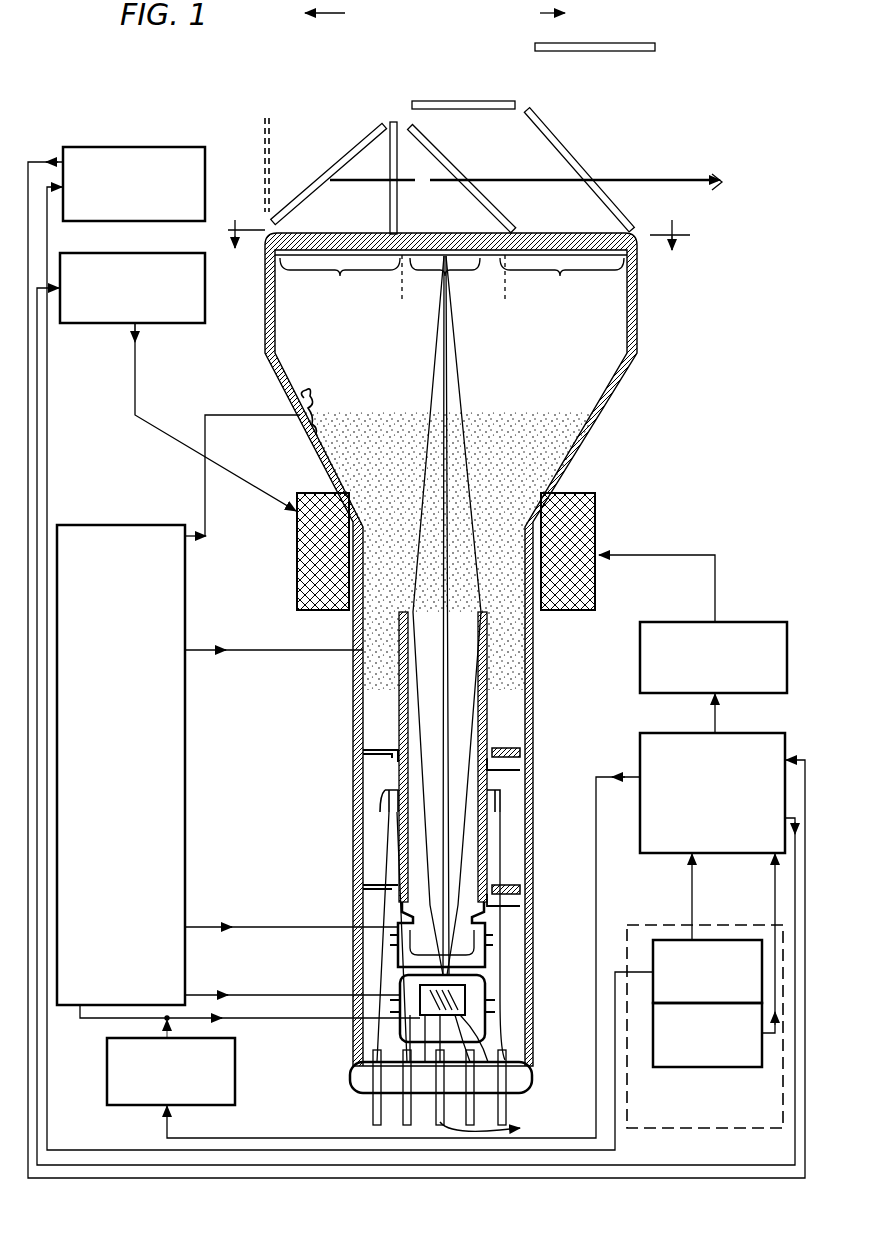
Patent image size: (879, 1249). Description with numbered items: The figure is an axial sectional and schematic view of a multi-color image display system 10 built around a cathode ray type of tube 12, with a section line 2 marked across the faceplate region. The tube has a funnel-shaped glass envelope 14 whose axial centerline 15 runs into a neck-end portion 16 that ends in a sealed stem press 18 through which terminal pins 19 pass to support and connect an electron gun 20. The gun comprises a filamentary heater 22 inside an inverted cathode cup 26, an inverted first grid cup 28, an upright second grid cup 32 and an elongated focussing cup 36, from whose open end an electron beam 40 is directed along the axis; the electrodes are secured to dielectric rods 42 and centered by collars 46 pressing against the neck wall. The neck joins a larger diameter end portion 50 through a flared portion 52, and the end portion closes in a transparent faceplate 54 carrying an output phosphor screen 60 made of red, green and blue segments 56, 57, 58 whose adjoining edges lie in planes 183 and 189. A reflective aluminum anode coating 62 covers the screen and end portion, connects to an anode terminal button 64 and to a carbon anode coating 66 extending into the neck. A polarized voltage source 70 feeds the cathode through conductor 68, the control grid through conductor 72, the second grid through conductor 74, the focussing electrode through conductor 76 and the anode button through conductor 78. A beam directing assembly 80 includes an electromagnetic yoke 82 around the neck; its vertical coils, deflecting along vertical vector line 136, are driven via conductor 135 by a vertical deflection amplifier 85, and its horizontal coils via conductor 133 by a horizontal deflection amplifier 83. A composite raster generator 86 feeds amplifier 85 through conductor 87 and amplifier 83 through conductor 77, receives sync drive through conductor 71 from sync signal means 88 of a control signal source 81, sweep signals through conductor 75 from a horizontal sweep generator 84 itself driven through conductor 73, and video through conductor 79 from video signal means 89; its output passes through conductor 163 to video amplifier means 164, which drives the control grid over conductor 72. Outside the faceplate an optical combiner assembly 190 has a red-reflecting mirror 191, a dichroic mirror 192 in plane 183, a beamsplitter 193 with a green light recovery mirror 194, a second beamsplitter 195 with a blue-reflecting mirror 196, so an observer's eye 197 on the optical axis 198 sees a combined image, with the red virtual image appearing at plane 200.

The section line 2- 2 is at (459, 247).
The multi-color image display system 10 is at (672, 400).
The cathode ray type of tube 12 is at (580, 485).
The funnel-shaped envelope 14 is at (536, 680).
The axial centerline 15 is at (442, 396).
The neck-end portion 16 is at (534, 692).
The stem press 18 is at (525, 1090).
The terminal pins 19 is at (491, 1127).
The electron gun 20 is at (502, 745).
The filamentary heater 22 is at (495, 1038).
The cathode cup 26 is at (467, 995).
The first grid cup 28 is at (487, 975).
The second grid cup 32 is at (488, 926).
The focussing cup 36 is at (490, 846).
The electron beam 40 is at (442, 330).
The dielectric rods 42 is at (380, 796).
The collars 46 is at (372, 750).
The larger diameter end portion 50 is at (638, 296).
The flared portion 52 is at (603, 402).
The faceplate 54 is at (565, 238).
The outer segment 56 is at (340, 278).
The central segment 57 is at (445, 278).
The outer segment 58 is at (562, 278).
The output phosphor screen 60 is at (437, 257).
The anode coating 62 is at (360, 258).
The anode terminal button 64 is at (303, 397).
The anode coating 66 is at (356, 410).
The conductor 68 is at (256, 993).
The polarized voltage source 70 is at (76, 524).
The conductor 71 is at (691, 892).
The conductor 72 is at (268, 1019).
The conductor 73 is at (50, 468).
The conductor 74 is at (268, 925).
The conductor 75 is at (30, 410).
The conductor 76 is at (302, 660).
The conductor 77 is at (40, 440).
The conductor 78 is at (206, 513).
The electrical conductor 79 is at (775, 905).
The beam directing assembly 80 is at (625, 538).
The control signal source 81 is at (715, 1130).
The electromagnetic yoke 82 is at (322, 492).
The horizontal deflection amplifier 83 is at (106, 326).
The horizontal sweep generator 84 is at (108, 224).
The vertical deflection amplifier 85 is at (770, 628).
The composite raster generator 86 is at (760, 732).
The conductor 87 is at (710, 720).
The sync signal means 88 is at (652, 966).
The video signal means 89 is at (652, 1040).
The conductor 133 is at (136, 380).
The conductor 135 is at (716, 590).
The vertical vector line 136 is at (376, 17).
The electrical conductor 163 is at (596, 858).
The video amplifier means 164 is at (236, 1094).
The plane 183 is at (392, 280).
The plane 189 is at (505, 290).
The optical combiner assembly 190 is at (522, 137).
The mirror 191 is at (366, 136).
The dichroic mirror 192 is at (393, 121).
The beamsplitter 193 is at (433, 134).
The green light recovery mirror 194 is at (488, 100).
The second beamsplitter 195 is at (553, 131).
The mirror 196 is at (634, 52).
The observer's eye 197 is at (722, 176).
The optical axis 198 is at (660, 180).
The plane 200 is at (270, 130).